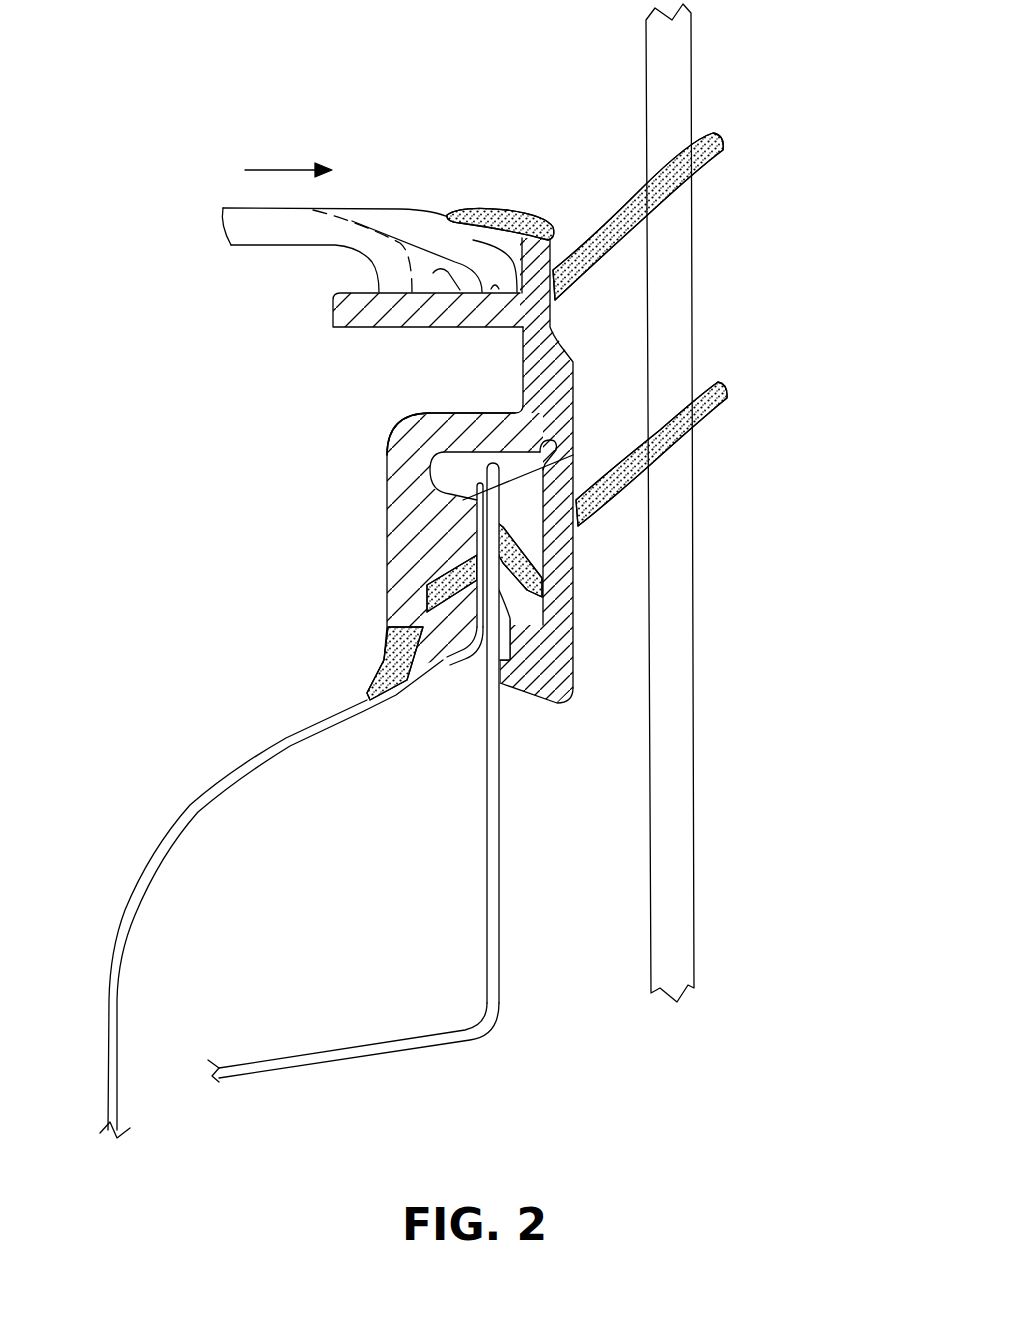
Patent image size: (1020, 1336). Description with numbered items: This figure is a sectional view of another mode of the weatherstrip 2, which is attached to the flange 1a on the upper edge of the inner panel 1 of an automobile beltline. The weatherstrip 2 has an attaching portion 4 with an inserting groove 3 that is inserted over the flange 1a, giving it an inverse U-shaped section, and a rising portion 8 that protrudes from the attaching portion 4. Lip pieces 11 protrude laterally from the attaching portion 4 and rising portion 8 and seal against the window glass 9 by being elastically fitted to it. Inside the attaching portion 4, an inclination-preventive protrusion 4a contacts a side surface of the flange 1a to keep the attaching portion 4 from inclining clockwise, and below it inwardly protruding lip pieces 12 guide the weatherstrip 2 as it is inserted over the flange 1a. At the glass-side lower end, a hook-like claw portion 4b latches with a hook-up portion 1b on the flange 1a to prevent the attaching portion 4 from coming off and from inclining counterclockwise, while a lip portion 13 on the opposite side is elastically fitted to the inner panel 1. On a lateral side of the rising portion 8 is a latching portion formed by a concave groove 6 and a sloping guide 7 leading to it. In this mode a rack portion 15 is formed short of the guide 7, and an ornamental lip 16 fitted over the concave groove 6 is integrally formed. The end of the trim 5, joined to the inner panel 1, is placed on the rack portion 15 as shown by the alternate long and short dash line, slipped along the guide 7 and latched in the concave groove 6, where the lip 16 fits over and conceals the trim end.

The inner panel 1 is at (239, 766).
The flange 1a is at (577, 460).
The hook-up portion 1b is at (510, 645).
The weatherstrip 2 is at (390, 430).
The inserting groove 3 is at (447, 643).
The attaching portion 4 is at (402, 492).
The inclination-preventive protrusion 4a is at (445, 495).
The claw portion 4b is at (528, 683).
The trim 5 is at (410, 207).
The concave groove 6 is at (488, 300).
The sloping guide 7 is at (450, 300).
The rising portion 8 is at (573, 360).
The window glass 9 is at (695, 695).
The lip pieces 11 is at (621, 243).
The lip pieces 12 is at (490, 537).
The lip portion 13 is at (388, 693).
The rack portion 15 is at (372, 318).
The ornamental lip 16 is at (511, 207).